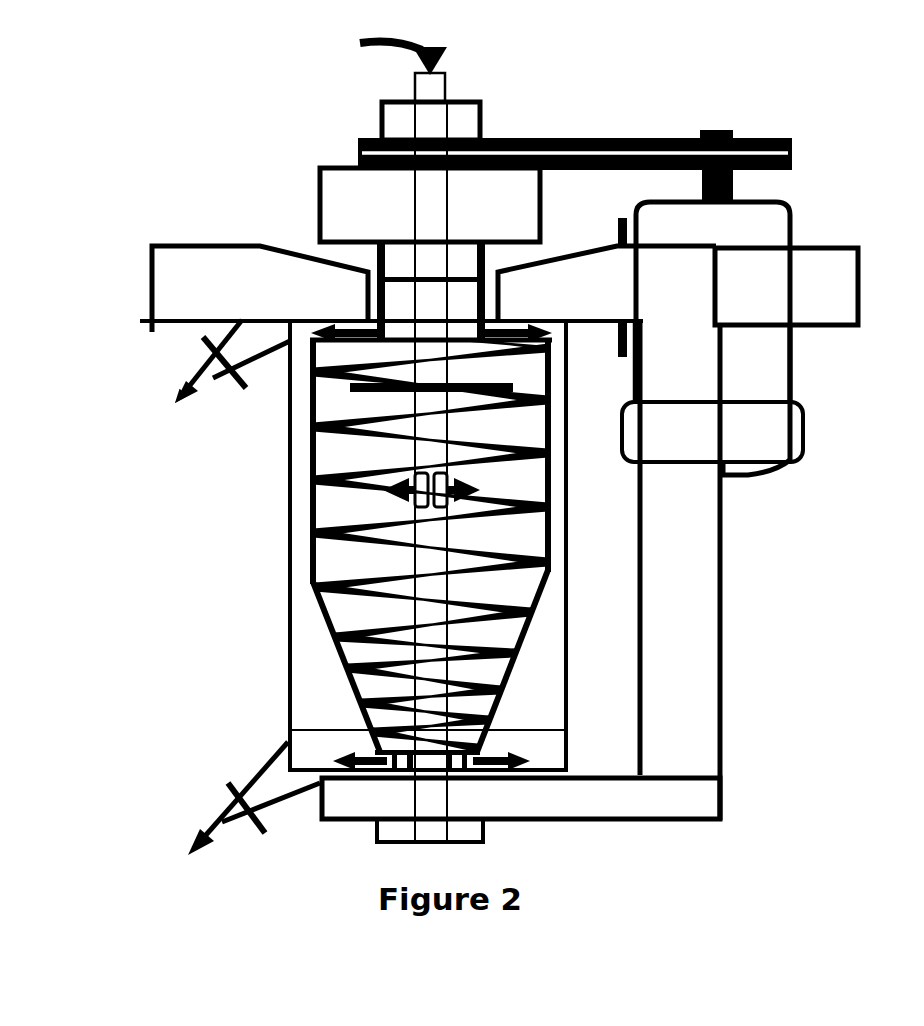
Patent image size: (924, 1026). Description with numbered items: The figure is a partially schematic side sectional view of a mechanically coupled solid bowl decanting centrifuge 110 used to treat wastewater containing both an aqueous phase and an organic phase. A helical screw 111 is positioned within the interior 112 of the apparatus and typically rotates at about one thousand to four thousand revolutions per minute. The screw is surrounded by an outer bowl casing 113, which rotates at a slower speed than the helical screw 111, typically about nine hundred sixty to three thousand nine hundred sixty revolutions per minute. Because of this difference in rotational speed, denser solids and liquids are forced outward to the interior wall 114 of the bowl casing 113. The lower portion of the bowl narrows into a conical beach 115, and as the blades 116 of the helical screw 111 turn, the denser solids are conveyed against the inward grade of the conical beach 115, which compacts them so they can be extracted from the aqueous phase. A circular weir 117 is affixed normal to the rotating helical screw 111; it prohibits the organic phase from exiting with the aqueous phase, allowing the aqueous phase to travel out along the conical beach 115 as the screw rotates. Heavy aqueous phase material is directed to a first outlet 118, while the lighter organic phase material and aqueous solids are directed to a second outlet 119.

The solid bowl decanting centrifuge 110 is at (258, 209).
The helical screw 111 is at (372, 543).
The interior 112 is at (363, 465).
The outer bowl casing 113 is at (540, 637).
The interior wall 114 is at (538, 427).
The conical beach 115 is at (346, 711).
The blades 116 is at (510, 574).
The circular weir 117 is at (352, 393).
The first outlet 118 is at (201, 373).
The second outlet 119 is at (216, 812).